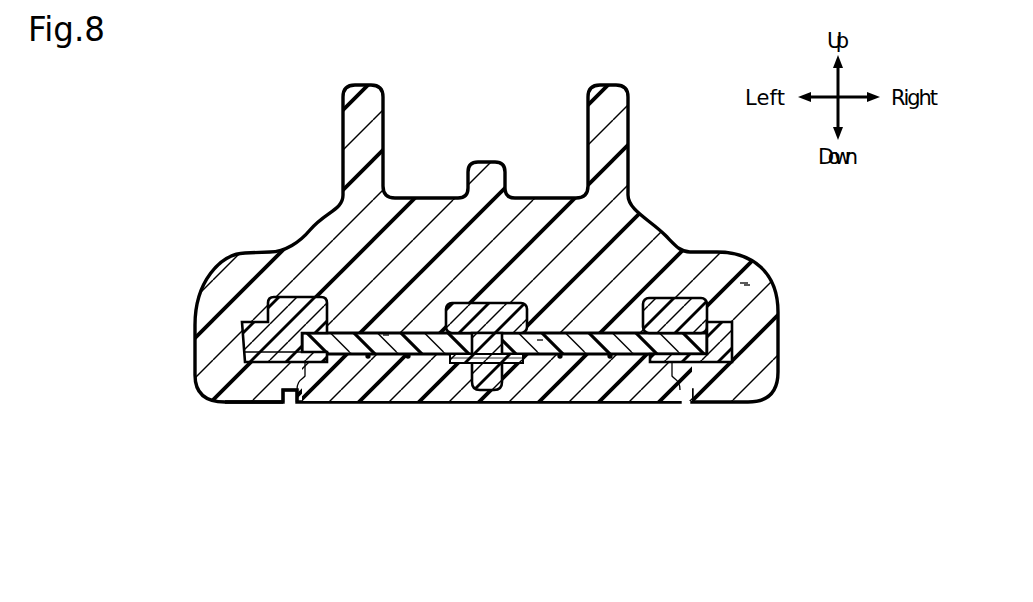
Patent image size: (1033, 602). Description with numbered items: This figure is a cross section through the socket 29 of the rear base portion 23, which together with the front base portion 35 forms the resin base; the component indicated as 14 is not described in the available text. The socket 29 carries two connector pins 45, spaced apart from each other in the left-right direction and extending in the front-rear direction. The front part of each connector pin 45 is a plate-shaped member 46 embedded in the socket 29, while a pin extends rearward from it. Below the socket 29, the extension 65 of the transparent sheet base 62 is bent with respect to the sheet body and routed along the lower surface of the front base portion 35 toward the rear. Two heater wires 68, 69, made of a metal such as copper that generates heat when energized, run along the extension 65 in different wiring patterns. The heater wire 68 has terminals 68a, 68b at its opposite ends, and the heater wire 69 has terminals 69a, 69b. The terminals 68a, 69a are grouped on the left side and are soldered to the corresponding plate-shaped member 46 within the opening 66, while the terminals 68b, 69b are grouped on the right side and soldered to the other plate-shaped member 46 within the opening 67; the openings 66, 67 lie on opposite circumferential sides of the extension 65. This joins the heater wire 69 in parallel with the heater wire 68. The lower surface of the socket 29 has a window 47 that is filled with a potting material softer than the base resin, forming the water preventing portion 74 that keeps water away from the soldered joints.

The holder 14 is at (212, 422).
The rear base portion 23 is at (811, 304).
The socket 29 is at (748, 283).
The front base portion 35 is at (290, 297).
The connector pin 45 is at (486, 231).
The plate-shaped member 46 is at (386, 335).
The window 47 is at (290, 403).
The sheet base 62 is at (486, 441).
The extension 65 is at (288, 364).
The opening 66 is at (330, 368).
The opening 67 is at (690, 400).
The heater wire 68 is at (491, 419).
The terminal 68a is at (368, 359).
The terminal 68b is at (611, 358).
The heater wire 69 is at (487, 423).
The terminal 69a is at (406, 358).
The terminal 69b is at (562, 358).
The water preventing portion 74 is at (463, 397).